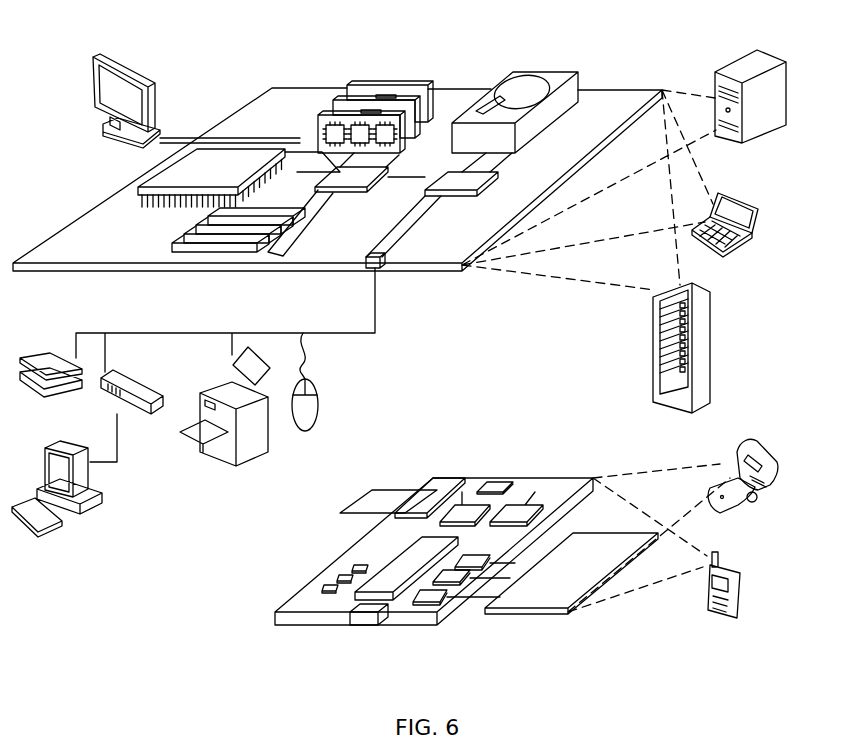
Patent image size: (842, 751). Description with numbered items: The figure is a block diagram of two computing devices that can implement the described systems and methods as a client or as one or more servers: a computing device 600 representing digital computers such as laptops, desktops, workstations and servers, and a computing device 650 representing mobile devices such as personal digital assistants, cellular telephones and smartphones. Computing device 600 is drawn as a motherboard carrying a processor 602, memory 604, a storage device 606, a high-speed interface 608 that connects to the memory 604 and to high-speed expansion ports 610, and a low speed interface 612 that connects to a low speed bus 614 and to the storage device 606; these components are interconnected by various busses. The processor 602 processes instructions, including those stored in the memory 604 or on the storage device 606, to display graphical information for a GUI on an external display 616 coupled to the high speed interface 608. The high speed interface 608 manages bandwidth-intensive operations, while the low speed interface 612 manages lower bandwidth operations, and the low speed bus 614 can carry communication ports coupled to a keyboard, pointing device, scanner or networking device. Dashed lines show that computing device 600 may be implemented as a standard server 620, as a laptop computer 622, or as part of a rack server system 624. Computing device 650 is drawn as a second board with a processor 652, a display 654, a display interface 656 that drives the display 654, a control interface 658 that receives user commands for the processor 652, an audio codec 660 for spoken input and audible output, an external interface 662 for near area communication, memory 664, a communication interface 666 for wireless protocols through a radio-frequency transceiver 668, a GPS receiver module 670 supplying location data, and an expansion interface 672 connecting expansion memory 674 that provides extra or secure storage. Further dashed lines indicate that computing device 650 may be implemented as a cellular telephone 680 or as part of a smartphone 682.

The computing device 600 is at (286, 50).
The processor 602 is at (147, 191).
The memory 604 is at (355, 84).
The storage device 606 is at (508, 74).
The high-speed interface 608 is at (335, 176).
The high-speed expansion ports 610 is at (187, 243).
The low speed interface 612 is at (447, 177).
The low speed bus 614 is at (380, 263).
The display 616 is at (122, 44).
The standard server 620 is at (717, 74).
The laptop computer 622 is at (755, 206).
The rack server system 624 is at (655, 372).
The computing device 650 is at (258, 621).
The processor 652 is at (390, 587).
The display 654 is at (543, 603).
The display interface 656 is at (433, 603).
The control interface 658 is at (458, 583).
The audio codec 660 is at (475, 568).
The external interface 662 is at (367, 627).
The memory 664 is at (341, 580).
The communication interface 666 is at (466, 505).
The transceiver 668 is at (518, 505).
The GPS receiver module 670 is at (498, 481).
The expansion interface 672 is at (420, 490).
The expansion memory 674 is at (365, 490).
The cellular telephone 680 is at (747, 445).
The smartphone 682 is at (707, 592).